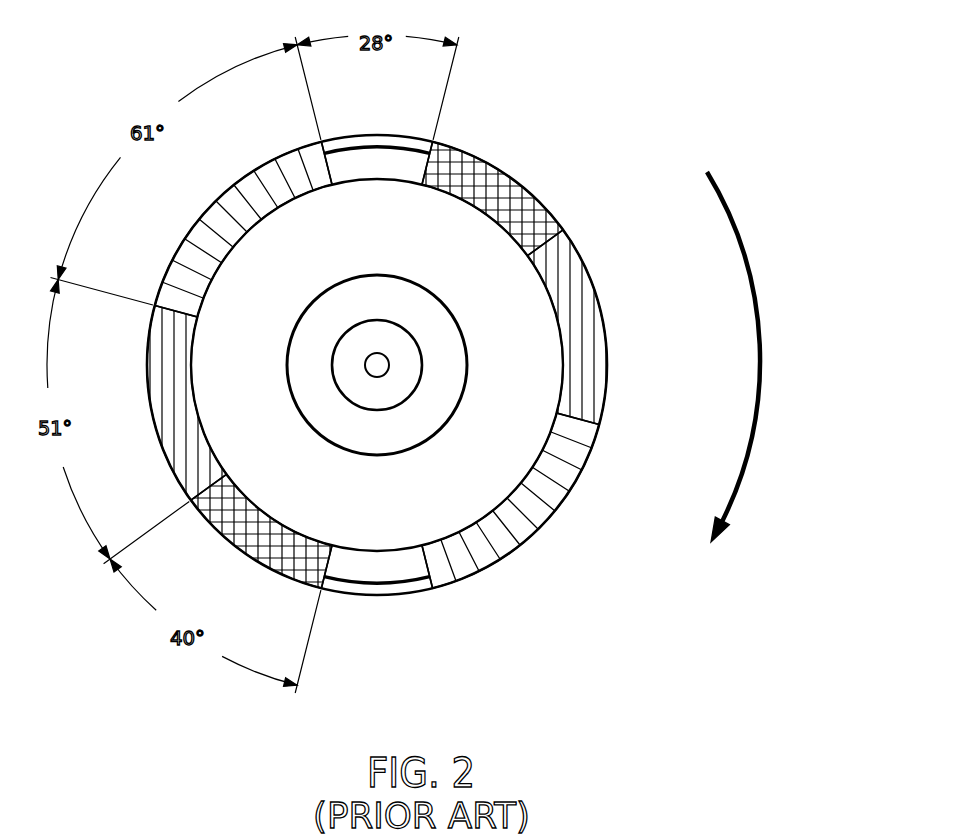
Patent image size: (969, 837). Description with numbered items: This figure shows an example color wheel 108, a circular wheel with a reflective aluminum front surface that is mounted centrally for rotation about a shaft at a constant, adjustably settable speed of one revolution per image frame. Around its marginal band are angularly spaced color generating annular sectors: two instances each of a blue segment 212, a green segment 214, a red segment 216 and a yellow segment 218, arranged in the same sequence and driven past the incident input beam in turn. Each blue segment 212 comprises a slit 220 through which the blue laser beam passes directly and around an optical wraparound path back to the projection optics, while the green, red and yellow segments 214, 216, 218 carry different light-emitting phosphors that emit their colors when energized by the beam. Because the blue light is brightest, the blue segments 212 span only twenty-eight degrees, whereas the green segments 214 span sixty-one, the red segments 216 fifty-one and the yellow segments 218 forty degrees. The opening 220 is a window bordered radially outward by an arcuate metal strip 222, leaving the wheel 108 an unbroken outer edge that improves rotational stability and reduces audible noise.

The wheel 108 is at (736, 134).
The blue segment 212 is at (365, 190).
The green segment 214 is at (213, 216).
The red segment 216 is at (152, 366).
The yellow segment 218 is at (257, 548).
The slit 220 is at (412, 158).
The arcuate metal strip 222 is at (375, 146).